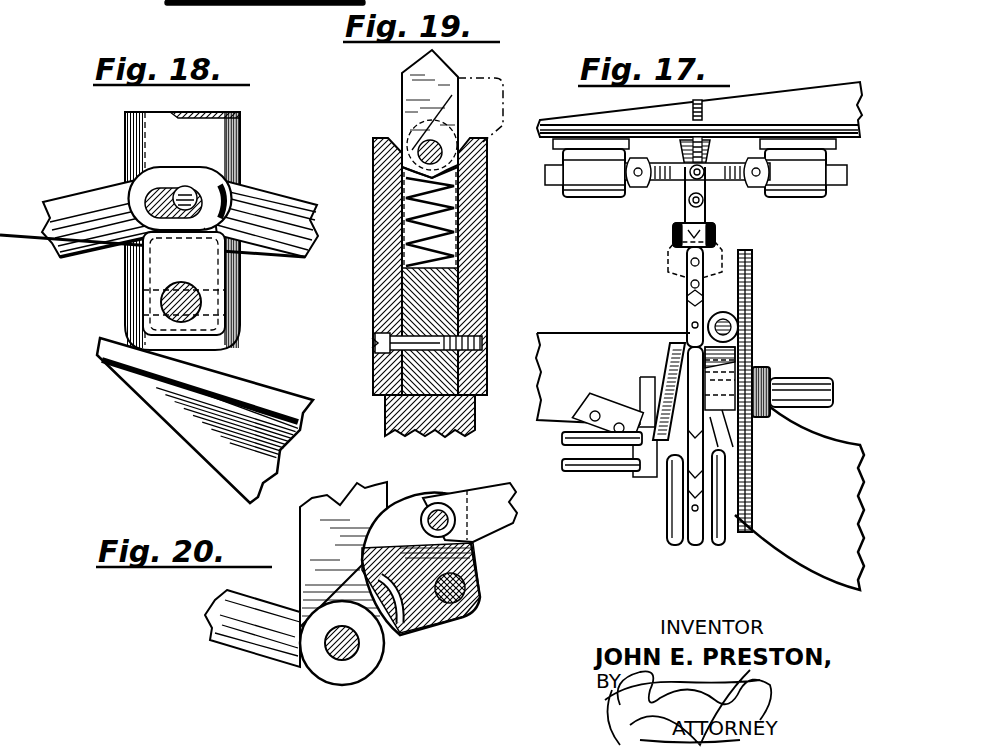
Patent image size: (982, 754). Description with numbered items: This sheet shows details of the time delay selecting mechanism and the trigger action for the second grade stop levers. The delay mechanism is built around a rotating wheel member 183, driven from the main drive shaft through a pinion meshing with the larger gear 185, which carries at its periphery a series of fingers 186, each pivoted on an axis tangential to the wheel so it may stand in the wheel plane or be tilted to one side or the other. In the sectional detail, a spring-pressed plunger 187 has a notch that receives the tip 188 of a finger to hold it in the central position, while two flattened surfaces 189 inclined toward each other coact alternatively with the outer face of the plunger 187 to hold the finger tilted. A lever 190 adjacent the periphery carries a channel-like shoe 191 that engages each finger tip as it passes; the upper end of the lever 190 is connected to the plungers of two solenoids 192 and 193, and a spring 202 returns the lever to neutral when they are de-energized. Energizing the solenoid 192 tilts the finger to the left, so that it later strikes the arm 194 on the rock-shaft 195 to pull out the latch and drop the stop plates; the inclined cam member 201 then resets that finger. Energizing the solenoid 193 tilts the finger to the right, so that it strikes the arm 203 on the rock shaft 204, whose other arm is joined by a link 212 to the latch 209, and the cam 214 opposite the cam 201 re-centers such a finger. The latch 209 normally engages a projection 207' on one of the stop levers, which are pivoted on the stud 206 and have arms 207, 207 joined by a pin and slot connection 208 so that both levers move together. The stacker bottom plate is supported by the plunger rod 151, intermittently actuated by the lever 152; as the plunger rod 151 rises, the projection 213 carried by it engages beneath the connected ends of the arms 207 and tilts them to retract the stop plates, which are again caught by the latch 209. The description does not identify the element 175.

In FIG. 18, the plunger rod 151 is at (143, 135).
In FIG. 18, the lever 152 is at (158, 400).
In FIG. 18, the pivot block 175 is at (212, 302).
In FIG. 20, the arm 207 is at (246, 642).
In FIG. 18, the pin and slot connection 208 is at (222, 180).
In FIG. 18, the projection 213 is at (162, 252).
In FIG. 19, the rotating member 183 is at (400, 415).
In FIG. 17, the rotating member 183 is at (695, 353).
In FIG. 17, the larger gear 185 is at (753, 273).
In FIG. 19, the finger 186 is at (413, 87).
In FIG. 19, the spring-pressed plunger 187 is at (435, 194).
In FIG. 19, the tip 188 is at (405, 170).
In FIG. 19, the flattened surfaces 189 is at (452, 142).
In FIG. 17, the lever 190 is at (687, 210).
In FIG. 17, the channel-like shoe 191 is at (716, 236).
In FIG. 17, the solenoid 192 is at (810, 197).
In FIG. 17, the solenoid 193 is at (585, 190).
In FIG. 17, the arm 194 is at (670, 541).
In FIG. 17, the rock-shaft 195 is at (590, 472).
In FIG. 17, the inclined cam member 201 is at (672, 365).
In FIG. 17, the spring 202 is at (703, 114).
In FIG. 17, the arm 203 is at (718, 546).
In FIG. 17, the rock shaft 204 is at (566, 440).
In FIG. 17, the cam 214 is at (753, 430).
In FIG. 20, the stud 206 is at (343, 660).
In FIG. 20, the projection 207' is at (419, 622).
In FIG. 20, the latch 209 is at (473, 558).
In FIG. 20, the link 212 is at (487, 495).